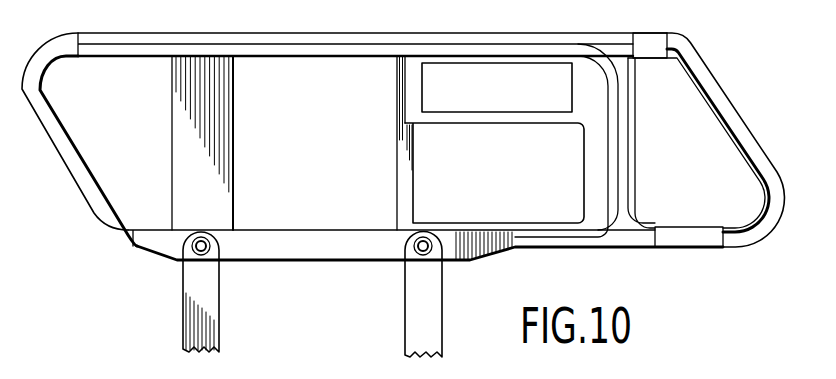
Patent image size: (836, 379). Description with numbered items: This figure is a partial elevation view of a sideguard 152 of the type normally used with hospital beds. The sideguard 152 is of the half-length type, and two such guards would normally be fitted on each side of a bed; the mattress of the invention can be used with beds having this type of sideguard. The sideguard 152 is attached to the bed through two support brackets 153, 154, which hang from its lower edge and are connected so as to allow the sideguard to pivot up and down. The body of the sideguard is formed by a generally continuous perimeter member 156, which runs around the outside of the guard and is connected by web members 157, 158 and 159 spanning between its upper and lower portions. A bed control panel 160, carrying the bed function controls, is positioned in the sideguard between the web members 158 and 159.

The sideguard 152 is at (665, 280).
The support bracket 153 is at (212, 303).
The support bracket 154 is at (433, 305).
The perimeter member 156 is at (99, 232).
The web member 157 is at (232, 170).
The web member 158 is at (412, 164).
The web member 159 is at (629, 159).
The bed control panel 160 is at (505, 98).